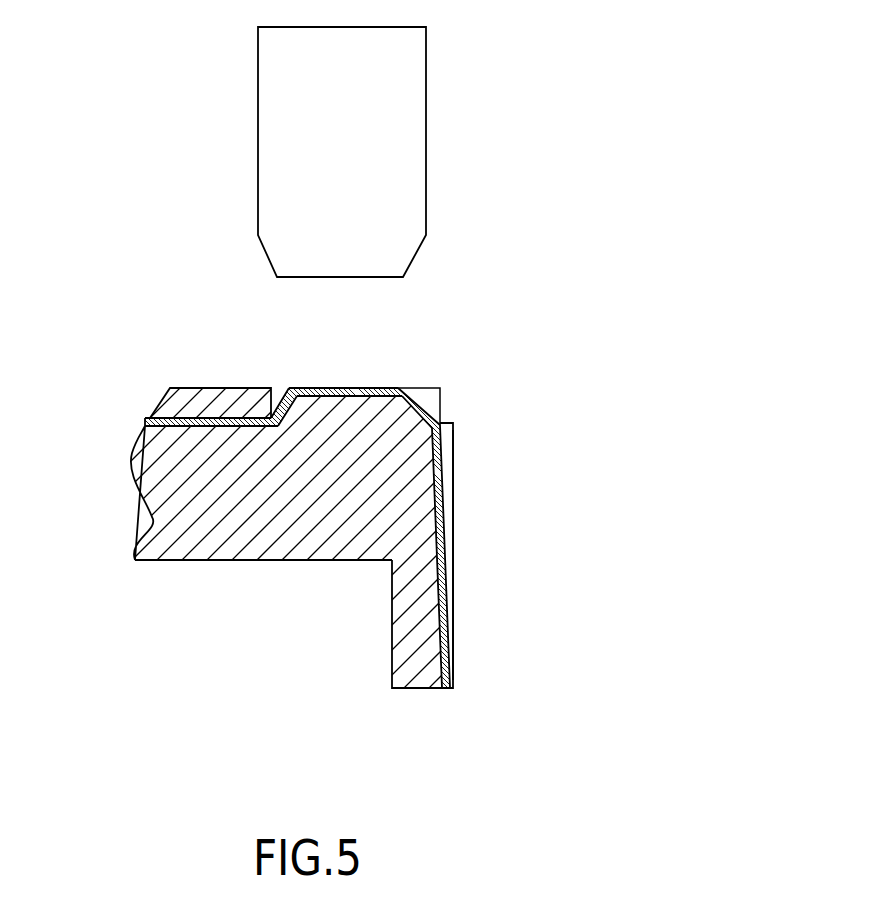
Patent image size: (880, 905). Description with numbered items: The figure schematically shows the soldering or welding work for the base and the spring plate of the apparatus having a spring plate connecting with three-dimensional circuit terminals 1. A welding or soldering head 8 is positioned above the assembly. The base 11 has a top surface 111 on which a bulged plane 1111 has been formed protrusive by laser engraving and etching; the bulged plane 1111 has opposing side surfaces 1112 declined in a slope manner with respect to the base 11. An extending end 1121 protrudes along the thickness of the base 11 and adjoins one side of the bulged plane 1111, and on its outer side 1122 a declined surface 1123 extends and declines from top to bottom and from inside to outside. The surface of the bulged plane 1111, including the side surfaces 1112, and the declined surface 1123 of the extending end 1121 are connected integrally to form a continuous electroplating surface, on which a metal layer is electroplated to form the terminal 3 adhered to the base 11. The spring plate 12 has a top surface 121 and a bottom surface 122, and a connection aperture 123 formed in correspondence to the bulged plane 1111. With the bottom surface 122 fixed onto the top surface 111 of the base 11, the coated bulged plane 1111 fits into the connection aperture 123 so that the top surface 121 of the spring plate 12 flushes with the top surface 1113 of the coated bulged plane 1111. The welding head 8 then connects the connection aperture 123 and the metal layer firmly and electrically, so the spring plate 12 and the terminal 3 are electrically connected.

The apparatus having a spring plate connecting with 3D circuit terminals 1 is at (380, 480).
The terminal 3 is at (443, 580).
The welding or soldering head 8 is at (413, 200).
The base 11 is at (163, 492).
The spring plate 12 is at (172, 403).
The top surface 111 is at (194, 418).
The top surface 121 is at (235, 388).
The bottom surface 122 is at (145, 423).
The connection aperture 123 is at (273, 388).
The bulged plane 1111 is at (360, 390).
The side surface 1112 is at (438, 396).
The top surface 1113 is at (337, 390).
The extending end 1121 is at (393, 625).
The outer side 1122 is at (462, 520).
The declined surface 1123 is at (443, 470).